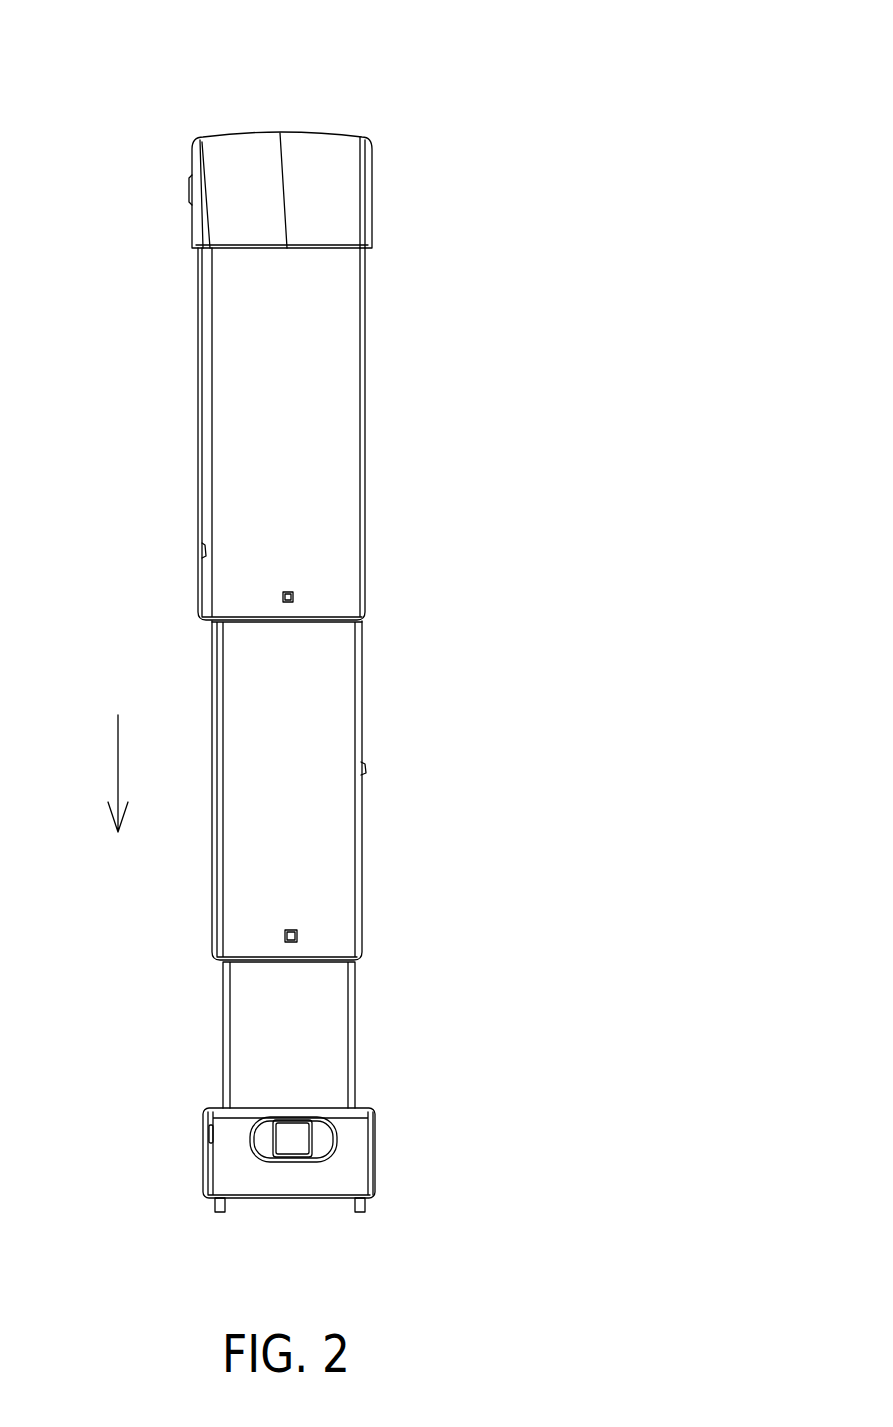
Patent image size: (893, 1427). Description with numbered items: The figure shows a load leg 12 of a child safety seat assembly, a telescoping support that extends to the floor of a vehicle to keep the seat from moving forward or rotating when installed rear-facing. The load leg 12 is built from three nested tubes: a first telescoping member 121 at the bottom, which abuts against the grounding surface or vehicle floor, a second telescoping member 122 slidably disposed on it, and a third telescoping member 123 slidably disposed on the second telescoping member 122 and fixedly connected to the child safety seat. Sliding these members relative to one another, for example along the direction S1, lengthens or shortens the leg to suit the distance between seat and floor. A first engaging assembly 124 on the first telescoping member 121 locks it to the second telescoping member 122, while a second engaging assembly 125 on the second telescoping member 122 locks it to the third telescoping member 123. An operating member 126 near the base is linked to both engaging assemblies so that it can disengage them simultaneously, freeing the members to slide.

The load leg 12 is at (308, 612).
The first telescoping member 121 is at (323, 1015).
The second telescoping member 122 is at (330, 715).
The third telescoping member 123 is at (337, 415).
The first engaging assembly 124 is at (371, 768).
The second engaging assembly 125 is at (193, 552).
The operating member 126 is at (293, 1137).
The direction S1 is at (101, 773).